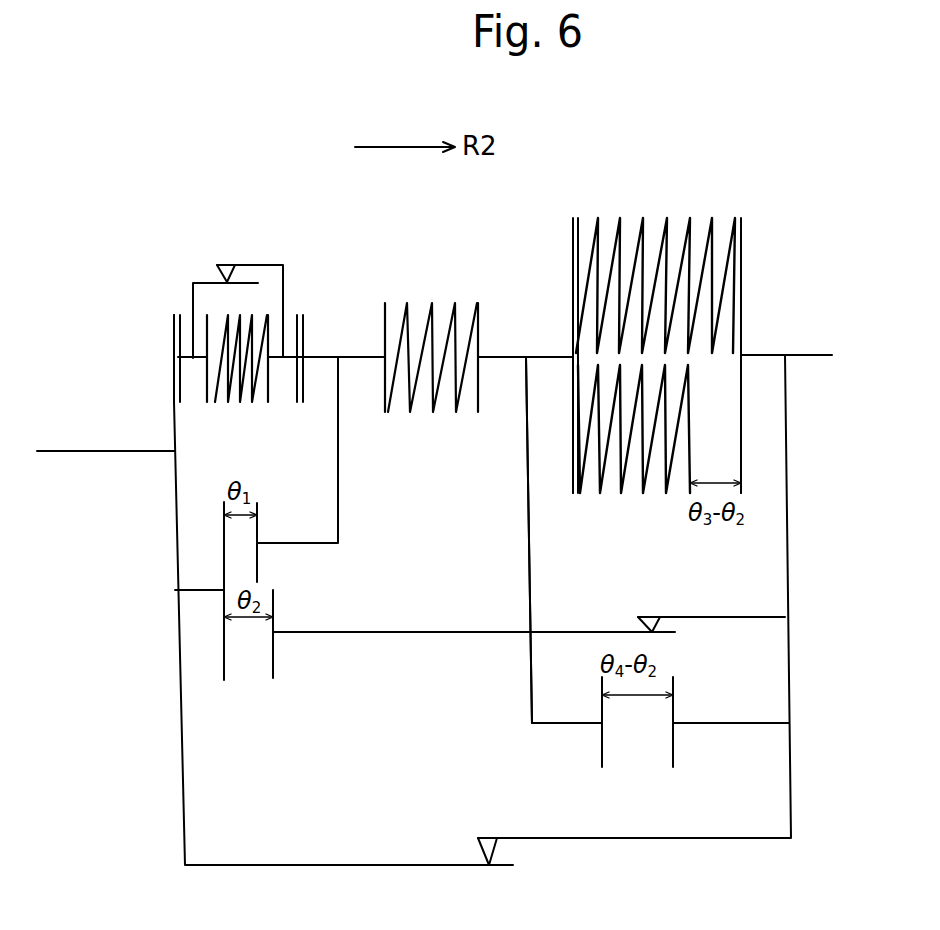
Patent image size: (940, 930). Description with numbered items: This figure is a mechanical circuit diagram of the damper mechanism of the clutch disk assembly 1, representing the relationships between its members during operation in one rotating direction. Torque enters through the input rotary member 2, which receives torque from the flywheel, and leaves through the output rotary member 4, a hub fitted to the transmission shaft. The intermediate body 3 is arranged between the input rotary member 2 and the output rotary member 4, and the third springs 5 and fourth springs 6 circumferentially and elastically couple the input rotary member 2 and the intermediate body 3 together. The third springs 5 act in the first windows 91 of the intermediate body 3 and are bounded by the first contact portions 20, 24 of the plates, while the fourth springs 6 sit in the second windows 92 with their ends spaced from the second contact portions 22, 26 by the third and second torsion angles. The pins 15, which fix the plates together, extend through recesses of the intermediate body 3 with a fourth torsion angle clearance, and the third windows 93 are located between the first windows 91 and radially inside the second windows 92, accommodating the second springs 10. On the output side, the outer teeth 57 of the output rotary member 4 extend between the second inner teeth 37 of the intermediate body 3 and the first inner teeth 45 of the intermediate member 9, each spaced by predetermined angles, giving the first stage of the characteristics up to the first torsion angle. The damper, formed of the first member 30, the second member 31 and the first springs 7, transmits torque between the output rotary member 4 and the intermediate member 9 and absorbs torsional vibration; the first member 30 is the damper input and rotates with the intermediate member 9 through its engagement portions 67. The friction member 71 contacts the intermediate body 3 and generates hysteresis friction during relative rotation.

The clutch disk assembly 1 is at (484, 198).
The input rotary member 2 is at (780, 355).
The intermediate body 3 is at (257, 230).
The output rotary member 4 is at (95, 450).
The third springs 5 is at (641, 226).
The fourth springs 6 is at (672, 465).
The first springs 7 is at (237, 340).
The intermediate member 9 is at (317, 352).
The second springs 10 is at (407, 320).
The pins 15 is at (675, 688).
The first contact portions 20 is at (802, 345).
The first contact portions 24 is at (742, 243).
The second contact portions 22 is at (821, 429).
The second contact portions 26 is at (742, 425).
The first member 30 is at (285, 290).
The second member 31 is at (193, 303).
The second inner teeth 37 is at (276, 599).
The first inner teeth 45 is at (258, 530).
The outer teeth 57 is at (222, 530).
The engagement portions 67 is at (600, 688).
The friction member 71 is at (652, 615).
The first windows 91 is at (573, 235).
The second windows 92 is at (575, 460).
The third windows 93 is at (478, 320).